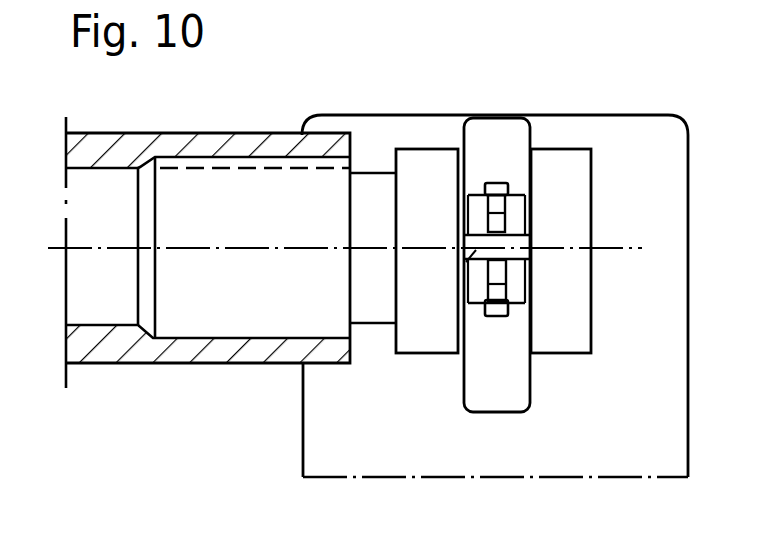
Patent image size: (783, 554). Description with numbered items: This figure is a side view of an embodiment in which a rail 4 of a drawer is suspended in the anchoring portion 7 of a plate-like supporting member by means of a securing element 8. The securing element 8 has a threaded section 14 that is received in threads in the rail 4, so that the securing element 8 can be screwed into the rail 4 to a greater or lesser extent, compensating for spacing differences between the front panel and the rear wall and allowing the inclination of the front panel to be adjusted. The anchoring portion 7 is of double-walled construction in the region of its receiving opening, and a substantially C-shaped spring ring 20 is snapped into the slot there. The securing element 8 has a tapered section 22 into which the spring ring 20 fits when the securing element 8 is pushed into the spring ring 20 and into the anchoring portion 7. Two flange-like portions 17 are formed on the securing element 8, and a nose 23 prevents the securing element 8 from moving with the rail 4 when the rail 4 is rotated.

The rail 4 is at (107, 130).
The threaded section 14 is at (228, 167).
The securing element 8 is at (371, 164).
The anchoring portion 7 is at (499, 111).
The flange-like portions 17 is at (415, 328).
The spring ring 20 is at (498, 303).
The tapered section 22 is at (508, 295).
The nose 23 is at (477, 253).